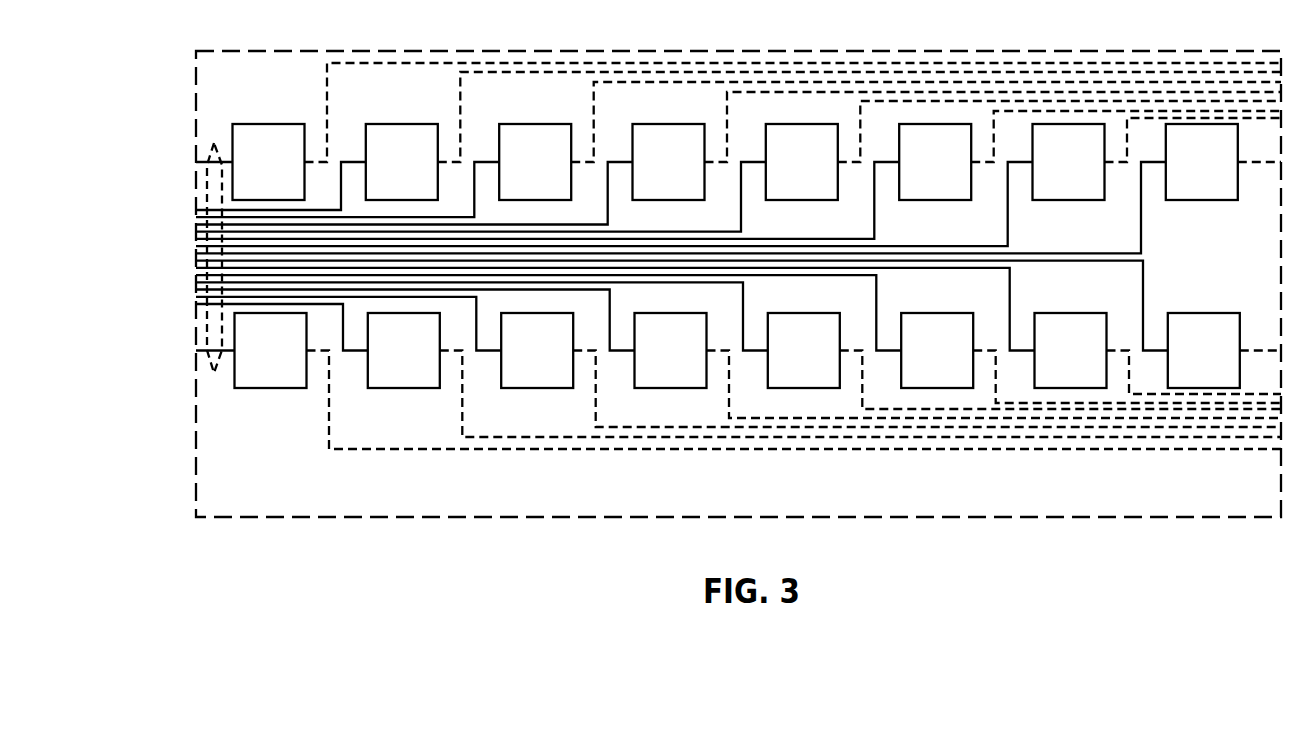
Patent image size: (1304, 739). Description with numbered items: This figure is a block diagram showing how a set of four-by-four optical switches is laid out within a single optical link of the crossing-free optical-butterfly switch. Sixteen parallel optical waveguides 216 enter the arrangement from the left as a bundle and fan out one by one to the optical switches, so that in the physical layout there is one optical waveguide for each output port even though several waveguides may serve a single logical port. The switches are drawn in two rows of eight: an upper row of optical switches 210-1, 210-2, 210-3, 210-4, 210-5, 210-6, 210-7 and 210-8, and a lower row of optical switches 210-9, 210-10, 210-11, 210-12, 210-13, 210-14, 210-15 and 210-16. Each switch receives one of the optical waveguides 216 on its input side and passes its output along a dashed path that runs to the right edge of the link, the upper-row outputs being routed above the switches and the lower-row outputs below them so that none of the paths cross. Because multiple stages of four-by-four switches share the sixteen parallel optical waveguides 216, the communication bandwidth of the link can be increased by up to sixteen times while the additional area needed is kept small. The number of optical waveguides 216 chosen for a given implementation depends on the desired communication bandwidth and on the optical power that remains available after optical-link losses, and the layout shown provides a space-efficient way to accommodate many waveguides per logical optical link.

The optical waveguides 216 is at (213, 143).
The optical switch 210-1 is at (247, 179).
The optical switch 210-2 is at (380, 179).
The optical switch 210-3 is at (557, 179).
The optical switch 210-4 is at (647, 179).
The optical switch 210-5 is at (780, 179).
The optical switch 210-6 is at (957, 179).
The optical switch 210-7 is at (1047, 179).
The optical switch 210-8 is at (1180, 179).
The optical switch 210-9 is at (248, 369).
The optical switch 210-10 is at (377, 369).
The optical switch 210-11 is at (564, 369).
The optical switch 210-12 is at (644, 369).
The optical switch 210-13 is at (777, 369).
The optical switch 210-14 is at (964, 369).
The optical switch 210-15 is at (1044, 369).
The optical switch 210-16 is at (1177, 369).